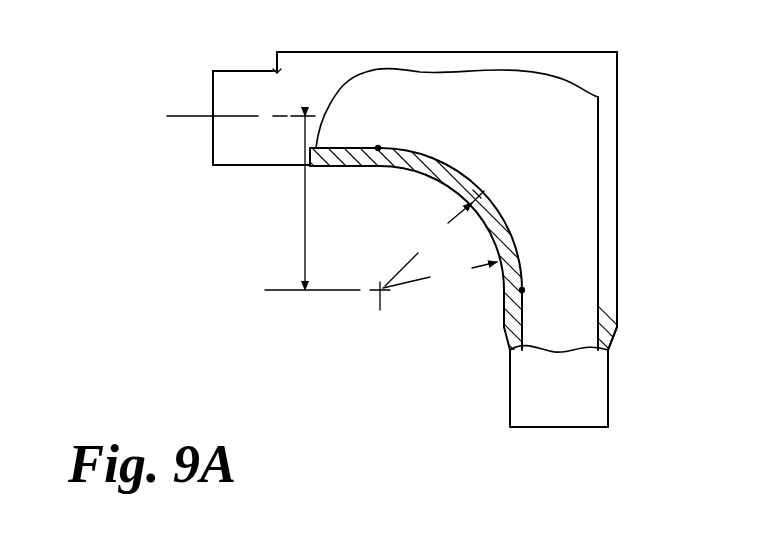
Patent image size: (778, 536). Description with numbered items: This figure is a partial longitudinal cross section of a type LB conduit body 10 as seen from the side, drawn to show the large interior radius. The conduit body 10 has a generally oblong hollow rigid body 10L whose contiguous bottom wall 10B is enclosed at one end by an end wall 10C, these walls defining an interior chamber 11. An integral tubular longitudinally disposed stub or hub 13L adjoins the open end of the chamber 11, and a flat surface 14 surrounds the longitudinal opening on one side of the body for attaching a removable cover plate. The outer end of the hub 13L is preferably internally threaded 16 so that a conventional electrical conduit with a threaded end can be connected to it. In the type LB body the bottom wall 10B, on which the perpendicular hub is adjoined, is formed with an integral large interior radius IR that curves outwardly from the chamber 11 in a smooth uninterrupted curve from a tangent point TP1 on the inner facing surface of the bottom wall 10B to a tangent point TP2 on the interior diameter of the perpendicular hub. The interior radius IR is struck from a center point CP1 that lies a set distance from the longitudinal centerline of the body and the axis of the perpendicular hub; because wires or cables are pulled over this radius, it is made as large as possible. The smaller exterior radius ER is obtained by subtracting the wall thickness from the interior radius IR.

The conduit body 10 is at (694, 62).
The hollow rigid body 10L is at (334, 66).
The bottom wall 10B is at (332, 148).
The end wall 10C is at (600, 92).
The interior chamber 11 is at (460, 118).
The longitudinal stub or hub 13L is at (222, 74).
The flat surface 14 is at (521, 52).
The internal threads 16 is at (245, 147).
The tangent point TP1 is at (378, 146).
The tangent point TP2 is at (524, 289).
The center point CP1 is at (327, 213).
The interior radius IR is at (434, 238).
The exterior radius ER is at (440, 275).